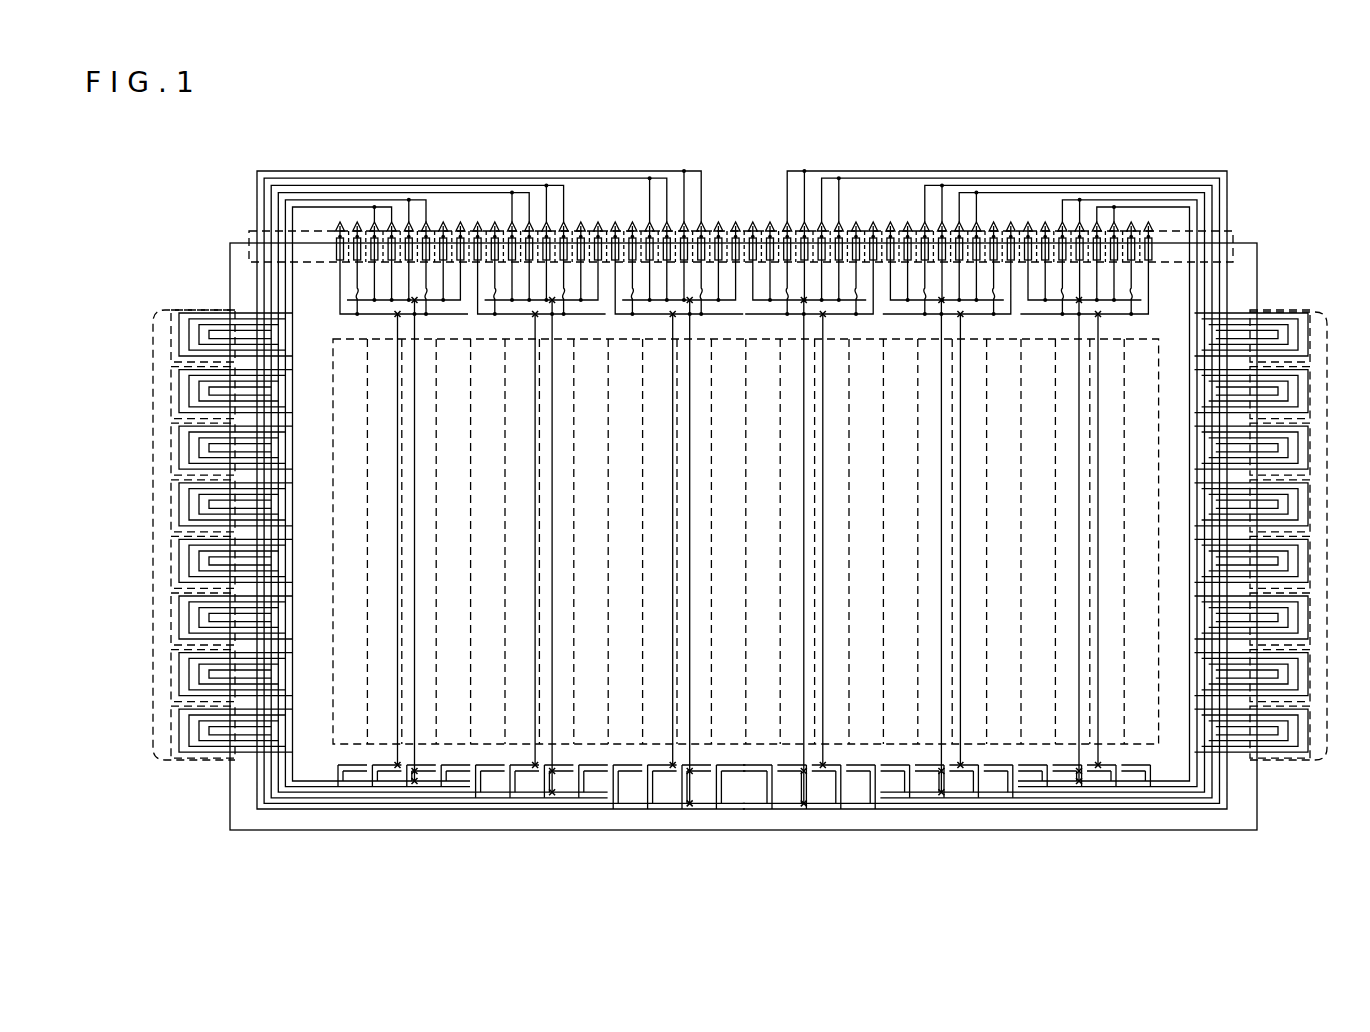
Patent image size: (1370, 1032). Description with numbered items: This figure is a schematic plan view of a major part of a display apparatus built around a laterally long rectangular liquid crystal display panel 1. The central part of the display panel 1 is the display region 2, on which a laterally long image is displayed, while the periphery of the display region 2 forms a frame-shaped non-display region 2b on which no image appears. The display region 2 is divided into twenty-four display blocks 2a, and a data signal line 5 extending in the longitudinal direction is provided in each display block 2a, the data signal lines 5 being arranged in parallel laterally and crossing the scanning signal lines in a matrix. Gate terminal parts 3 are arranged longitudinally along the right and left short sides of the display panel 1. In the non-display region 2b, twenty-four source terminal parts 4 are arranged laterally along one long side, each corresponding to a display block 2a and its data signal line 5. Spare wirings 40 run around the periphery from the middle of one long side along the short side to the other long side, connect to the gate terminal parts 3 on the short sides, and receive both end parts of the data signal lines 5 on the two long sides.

The display panel 1 is at (1258, 278).
The display region 2 is at (1156, 328).
The display block 2a is at (742, 862).
The non-display region 2b is at (1250, 264).
The gate terminal part 3 is at (153, 528).
The source terminal part 4 is at (312, 218).
The spare wiring 40 is at (486, 168).
The data signal line 5 is at (774, 551).